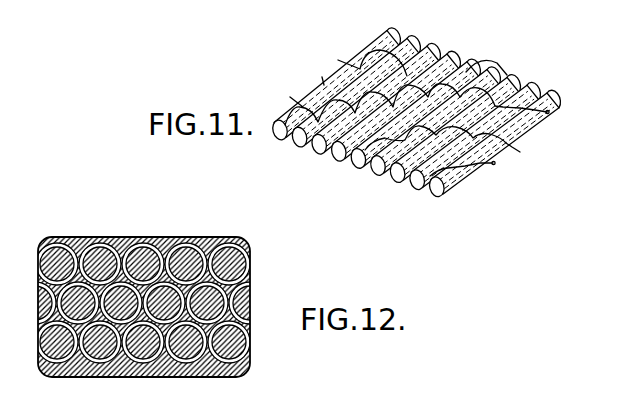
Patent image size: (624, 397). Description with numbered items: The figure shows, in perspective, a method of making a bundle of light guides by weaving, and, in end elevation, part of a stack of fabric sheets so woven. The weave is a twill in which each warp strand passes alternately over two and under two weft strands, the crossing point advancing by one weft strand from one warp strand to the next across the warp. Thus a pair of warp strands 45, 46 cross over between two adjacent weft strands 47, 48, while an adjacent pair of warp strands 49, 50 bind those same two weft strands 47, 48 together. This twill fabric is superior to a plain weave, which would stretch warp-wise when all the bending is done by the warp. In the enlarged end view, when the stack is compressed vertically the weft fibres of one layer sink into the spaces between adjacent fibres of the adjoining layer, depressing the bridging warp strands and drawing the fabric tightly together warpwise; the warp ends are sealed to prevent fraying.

The warp strand 45 is at (426, 191).
The warp strand 46 is at (447, 60).
The weft strand 47 is at (358, 166).
The weft strand 48 is at (380, 173).
The warp strand 49 is at (340, 158).
The warp strand 50 is at (475, 66).